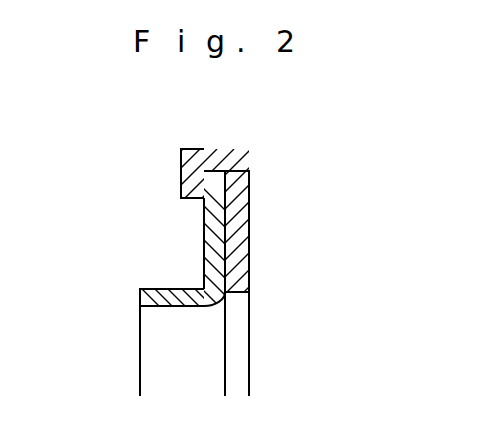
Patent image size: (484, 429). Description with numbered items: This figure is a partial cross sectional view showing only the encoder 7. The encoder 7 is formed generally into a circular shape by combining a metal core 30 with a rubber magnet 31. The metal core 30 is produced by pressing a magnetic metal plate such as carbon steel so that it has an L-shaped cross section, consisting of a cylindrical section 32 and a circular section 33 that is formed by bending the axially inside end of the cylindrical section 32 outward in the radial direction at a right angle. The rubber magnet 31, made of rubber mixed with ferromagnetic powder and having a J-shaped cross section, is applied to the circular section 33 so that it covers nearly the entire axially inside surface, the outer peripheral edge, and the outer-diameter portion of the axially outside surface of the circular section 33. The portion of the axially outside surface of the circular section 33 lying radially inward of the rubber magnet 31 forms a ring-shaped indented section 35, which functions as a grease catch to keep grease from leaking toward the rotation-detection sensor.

The encoder 7 is at (270, 158).
The metal core 30 is at (183, 292).
The rubber magnet 31 is at (240, 202).
The cylindrical section 32 is at (158, 289).
The circular section 33 is at (212, 230).
The ring-shaped indented section 35 is at (190, 195).